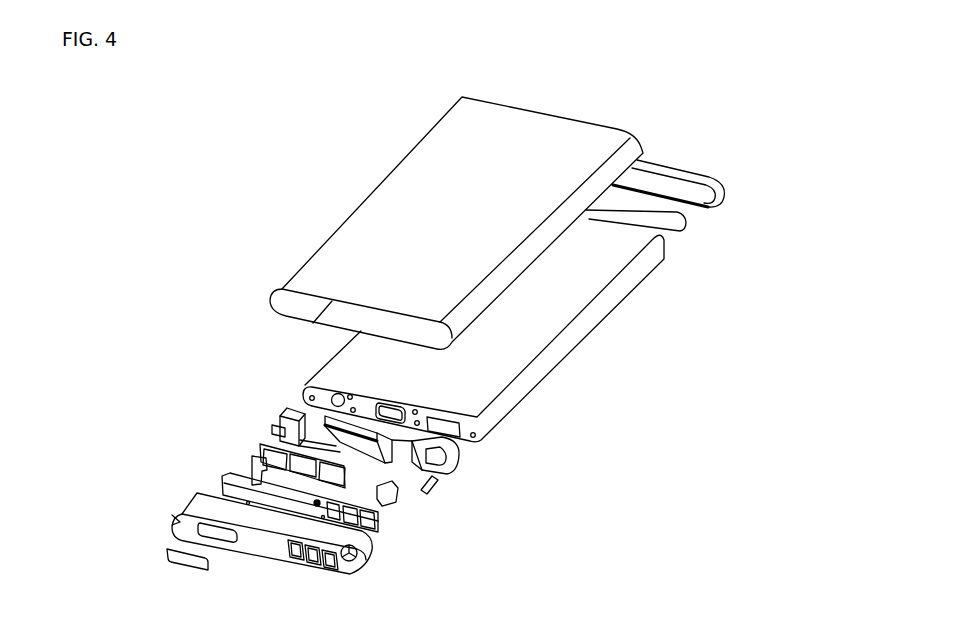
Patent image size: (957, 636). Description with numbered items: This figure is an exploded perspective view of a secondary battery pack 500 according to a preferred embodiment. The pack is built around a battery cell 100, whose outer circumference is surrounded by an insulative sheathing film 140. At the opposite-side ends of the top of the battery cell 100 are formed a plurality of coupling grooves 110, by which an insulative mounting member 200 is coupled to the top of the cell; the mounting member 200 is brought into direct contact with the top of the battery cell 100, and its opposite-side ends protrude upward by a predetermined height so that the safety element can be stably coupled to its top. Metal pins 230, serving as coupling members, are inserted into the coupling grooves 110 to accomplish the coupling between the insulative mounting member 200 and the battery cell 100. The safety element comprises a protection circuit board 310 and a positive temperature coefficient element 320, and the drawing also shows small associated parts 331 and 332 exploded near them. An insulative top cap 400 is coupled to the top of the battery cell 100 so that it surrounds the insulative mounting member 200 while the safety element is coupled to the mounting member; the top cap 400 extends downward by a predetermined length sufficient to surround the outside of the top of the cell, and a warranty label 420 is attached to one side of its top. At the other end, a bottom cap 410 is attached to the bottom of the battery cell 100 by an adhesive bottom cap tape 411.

The secondary battery pack 500 is at (102, 117).
The sheathing film 140 is at (373, 190).
The battery cell 100 is at (503, 367).
The coupling grooves 110 is at (481, 437).
The bottom cap 410 is at (664, 162).
The bottom cap tape 411 is at (684, 229).
The insulative mounting member 200 is at (369, 435).
The metal pins 230 is at (433, 484).
The positive temperature coefficient (PTC) element 320 is at (257, 452).
The left bracket 331 is at (253, 457).
The right bracket 332 is at (398, 493).
The protection circuit board 310 is at (383, 521).
The insulative top cap 400 is at (177, 522).
The warranty label 420 is at (167, 552).